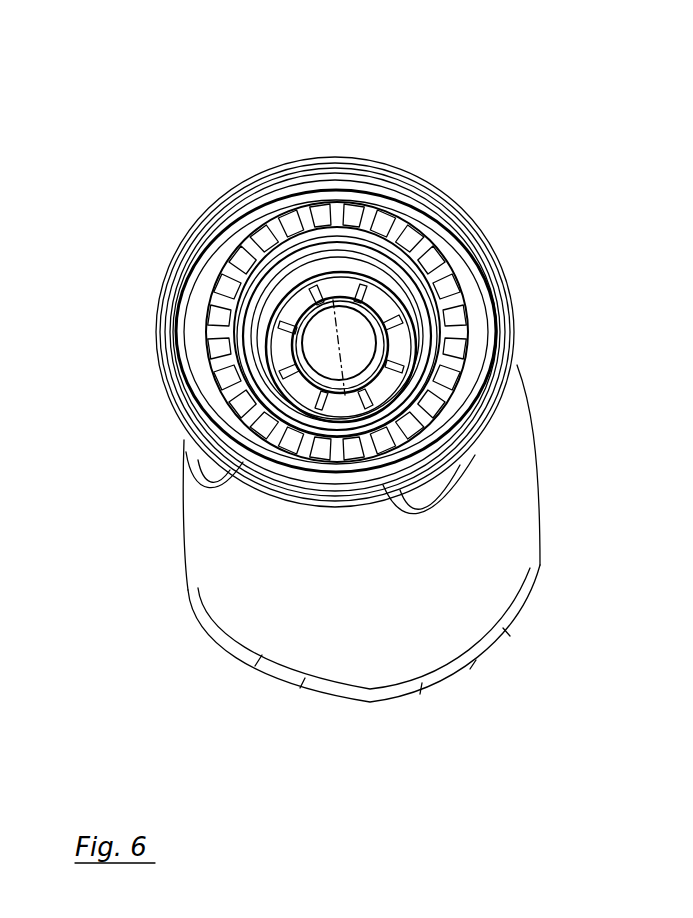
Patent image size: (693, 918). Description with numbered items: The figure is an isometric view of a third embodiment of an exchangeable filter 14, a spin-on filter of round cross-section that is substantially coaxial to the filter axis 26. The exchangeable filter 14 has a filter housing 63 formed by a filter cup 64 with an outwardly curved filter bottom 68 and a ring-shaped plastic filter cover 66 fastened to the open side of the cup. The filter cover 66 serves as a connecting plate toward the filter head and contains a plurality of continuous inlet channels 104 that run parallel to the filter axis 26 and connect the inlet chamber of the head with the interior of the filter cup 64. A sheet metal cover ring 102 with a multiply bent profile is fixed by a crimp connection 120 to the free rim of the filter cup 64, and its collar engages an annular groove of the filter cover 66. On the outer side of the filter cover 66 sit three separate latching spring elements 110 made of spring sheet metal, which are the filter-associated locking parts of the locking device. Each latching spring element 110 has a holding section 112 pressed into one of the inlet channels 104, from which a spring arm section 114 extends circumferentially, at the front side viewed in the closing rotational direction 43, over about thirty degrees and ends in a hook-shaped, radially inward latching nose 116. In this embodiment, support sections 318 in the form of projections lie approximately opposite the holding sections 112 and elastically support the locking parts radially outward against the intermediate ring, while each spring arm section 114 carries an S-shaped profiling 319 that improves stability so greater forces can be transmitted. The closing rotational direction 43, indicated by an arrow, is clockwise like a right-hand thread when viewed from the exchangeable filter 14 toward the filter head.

The exchangeable filter 14 is at (138, 80).
The filter axis 26 is at (328, 272).
The closing rotational direction 43 is at (461, 149).
The filter housing 63 is at (210, 512).
The filter cup 64 is at (220, 585).
The filter cover 66 is at (219, 304).
The filter bottom 68 is at (448, 668).
The sheet metal cover ring 102 is at (228, 204).
The inlet channels 104 is at (206, 355).
The latching spring elements 110 is at (464, 358).
The holding section 112 is at (466, 394).
The spring arm sections 114 is at (465, 324).
The latching nose 116 is at (487, 284).
The crimp connection 120 is at (178, 262).
The support sections 318 is at (470, 374).
The profiling 319 is at (467, 352).